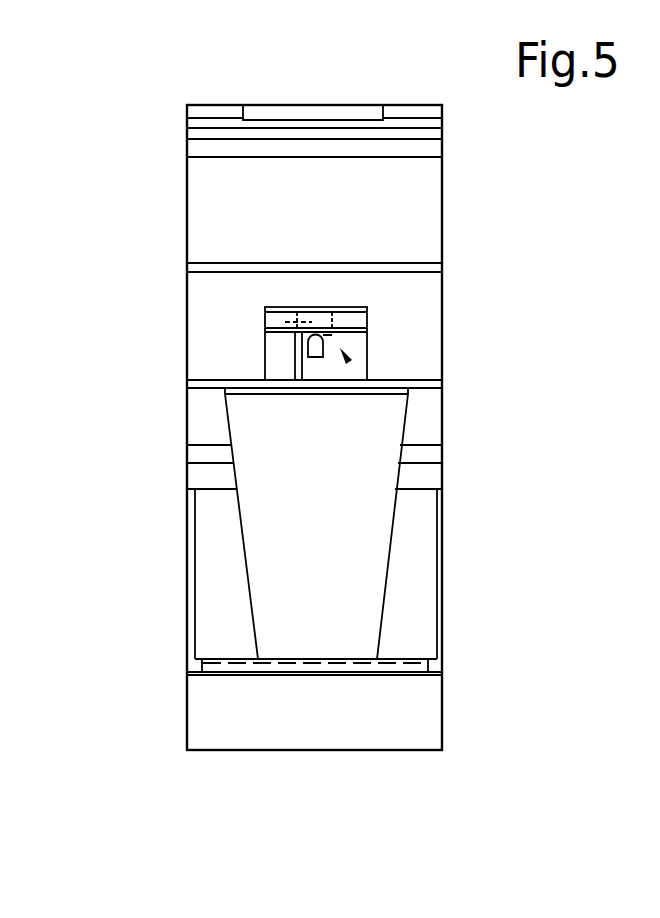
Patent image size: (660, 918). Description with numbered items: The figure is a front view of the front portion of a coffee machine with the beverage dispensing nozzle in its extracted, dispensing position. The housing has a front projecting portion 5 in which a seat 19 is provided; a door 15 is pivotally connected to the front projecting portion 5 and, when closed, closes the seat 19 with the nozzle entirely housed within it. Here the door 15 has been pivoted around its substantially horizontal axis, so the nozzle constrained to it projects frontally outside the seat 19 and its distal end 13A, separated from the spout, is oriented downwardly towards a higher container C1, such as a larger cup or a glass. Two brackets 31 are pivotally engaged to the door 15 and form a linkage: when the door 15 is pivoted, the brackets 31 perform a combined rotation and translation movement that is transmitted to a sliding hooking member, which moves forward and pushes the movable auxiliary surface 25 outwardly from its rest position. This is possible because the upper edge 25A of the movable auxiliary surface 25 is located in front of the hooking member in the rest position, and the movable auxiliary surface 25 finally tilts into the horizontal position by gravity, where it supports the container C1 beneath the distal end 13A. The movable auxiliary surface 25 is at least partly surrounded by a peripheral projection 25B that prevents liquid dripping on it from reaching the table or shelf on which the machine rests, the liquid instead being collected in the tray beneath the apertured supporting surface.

The front projecting portion 5 is at (405, 213).
The door 15 is at (353, 308).
The brackets 31 is at (295, 350).
The distal end of the beverage dispensing nozzle 13A is at (318, 357).
The seat 19 is at (349, 361).
The container C1 is at (360, 508).
The movable auxiliary surface 25 is at (407, 657).
The upper edge of the movable auxiliary surface 25A is at (323, 665).
The peripheral projection 25B is at (235, 656).